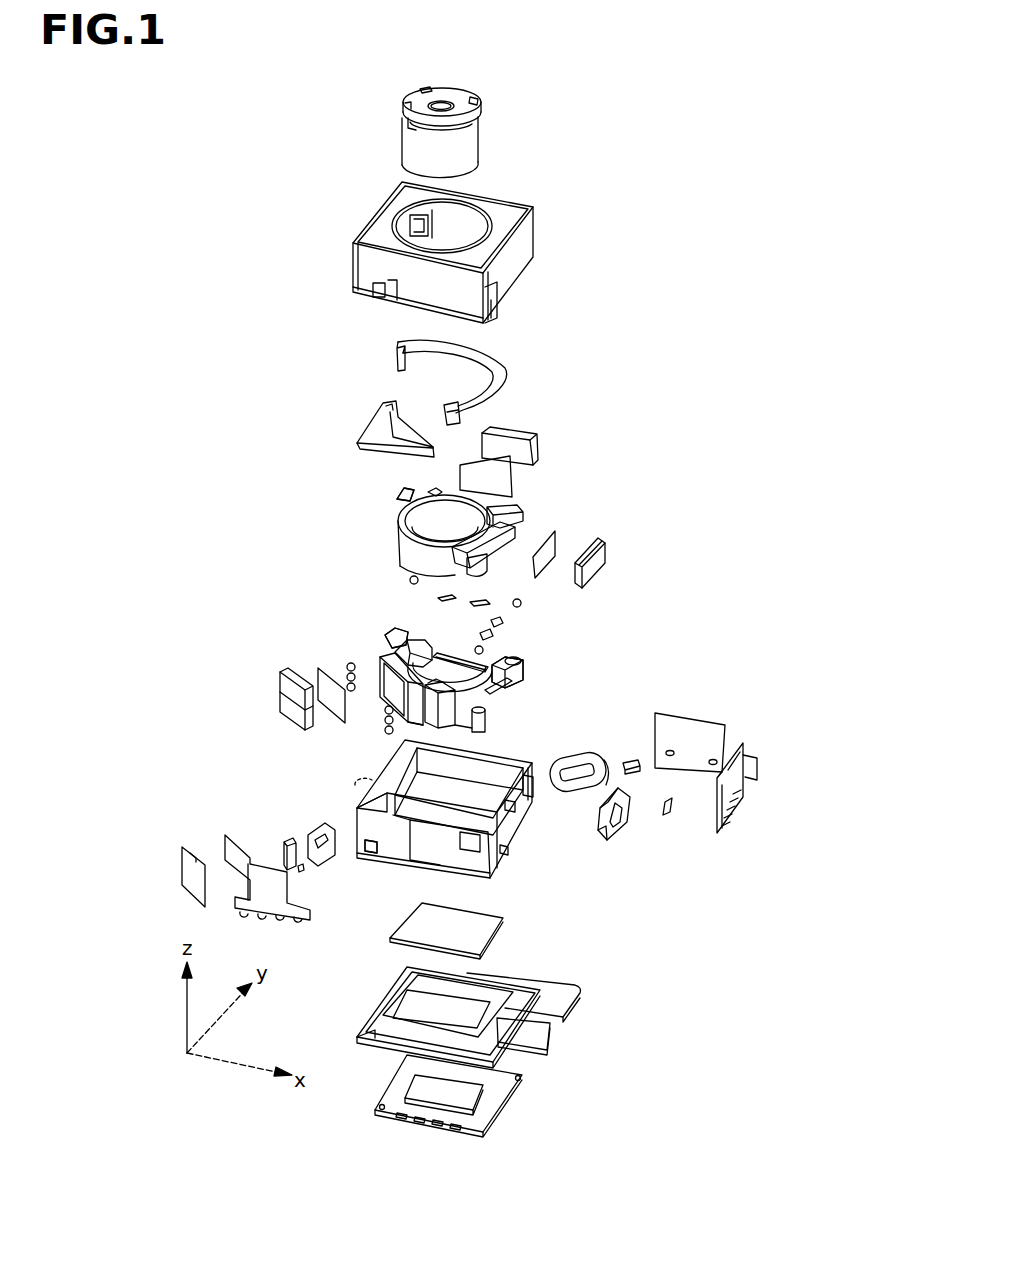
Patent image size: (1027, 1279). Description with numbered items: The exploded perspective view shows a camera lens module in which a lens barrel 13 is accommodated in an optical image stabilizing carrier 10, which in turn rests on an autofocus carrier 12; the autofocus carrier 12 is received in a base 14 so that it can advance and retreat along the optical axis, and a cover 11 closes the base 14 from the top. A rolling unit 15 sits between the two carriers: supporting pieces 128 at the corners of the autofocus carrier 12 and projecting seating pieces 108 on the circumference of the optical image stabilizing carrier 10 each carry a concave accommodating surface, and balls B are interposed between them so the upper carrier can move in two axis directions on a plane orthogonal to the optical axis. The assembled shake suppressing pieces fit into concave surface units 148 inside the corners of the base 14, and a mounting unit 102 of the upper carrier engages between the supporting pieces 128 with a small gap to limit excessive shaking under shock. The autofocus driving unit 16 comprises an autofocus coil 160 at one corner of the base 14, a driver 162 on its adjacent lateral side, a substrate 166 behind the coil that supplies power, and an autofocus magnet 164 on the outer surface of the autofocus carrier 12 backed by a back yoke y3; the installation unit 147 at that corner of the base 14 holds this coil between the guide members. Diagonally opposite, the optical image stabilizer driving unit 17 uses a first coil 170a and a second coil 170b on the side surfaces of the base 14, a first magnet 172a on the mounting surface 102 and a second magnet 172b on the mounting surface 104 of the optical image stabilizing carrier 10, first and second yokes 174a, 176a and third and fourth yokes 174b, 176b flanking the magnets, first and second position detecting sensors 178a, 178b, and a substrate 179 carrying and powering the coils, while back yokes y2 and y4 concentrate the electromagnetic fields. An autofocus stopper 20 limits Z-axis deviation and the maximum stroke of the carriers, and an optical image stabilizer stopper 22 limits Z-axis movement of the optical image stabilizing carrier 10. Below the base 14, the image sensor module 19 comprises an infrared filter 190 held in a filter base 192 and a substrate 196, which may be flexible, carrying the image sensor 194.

The lens barrel 13 is at (485, 138).
The cover 11 is at (530, 237).
The optical image stabilizer stopper 22 is at (507, 366).
The autofocus stopper 20 is at (386, 432).
The second magnet 172b is at (535, 456).
The mounting surface 104 is at (497, 501).
The optical image stabilizing carrier 10 is at (404, 518).
The seating piece 108 is at (395, 489).
The mounting unit 102 is at (520, 540).
The back yoke y2 is at (555, 552).
The first magnet 172a is at (607, 561).
The ball B is at (410, 579).
The fourth yoke 176b is at (437, 598).
The third yoke 174b is at (470, 603).
The second yoke 176a is at (503, 619).
The first yoke 174a is at (494, 637).
The autofocus carrier 12 is at (490, 722).
The supporting piece 128 is at (392, 645).
The back yoke y3 is at (320, 676).
The autofocus magnet 164 is at (290, 690).
The autofocus driving unit 16 is at (168, 708).
The autofocus coil 160 is at (308, 832).
The driver 162 is at (287, 850).
The substrate 166 is at (228, 853).
The back yoke y4 is at (188, 870).
The concave surface unit 148 is at (390, 781).
The base 14 is at (508, 843).
The installation unit 147 is at (388, 858).
The second coil 170b is at (585, 745).
The second position detecting sensor 178b is at (633, 760).
The first coil 170a is at (625, 822).
The first position detecting sensor 178a is at (672, 810).
The substrate 179 is at (760, 758).
The optical image stabilizer driving unit 17 is at (777, 872).
The rolling unit 15 is at (246, 488).
The infrared filter 190 is at (497, 928).
The filter base 192 is at (467, 974).
The image sensor module 19 is at (683, 923).
The substrate 196 is at (527, 1034).
The image sensor 194 is at (483, 1088).